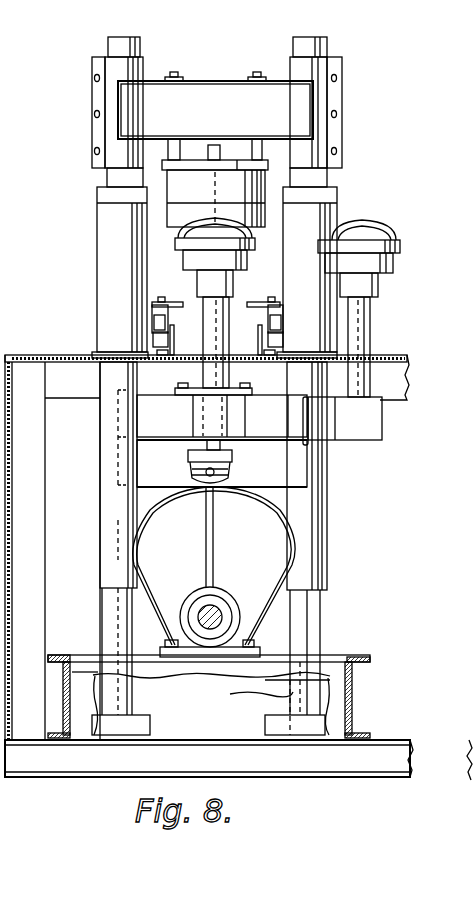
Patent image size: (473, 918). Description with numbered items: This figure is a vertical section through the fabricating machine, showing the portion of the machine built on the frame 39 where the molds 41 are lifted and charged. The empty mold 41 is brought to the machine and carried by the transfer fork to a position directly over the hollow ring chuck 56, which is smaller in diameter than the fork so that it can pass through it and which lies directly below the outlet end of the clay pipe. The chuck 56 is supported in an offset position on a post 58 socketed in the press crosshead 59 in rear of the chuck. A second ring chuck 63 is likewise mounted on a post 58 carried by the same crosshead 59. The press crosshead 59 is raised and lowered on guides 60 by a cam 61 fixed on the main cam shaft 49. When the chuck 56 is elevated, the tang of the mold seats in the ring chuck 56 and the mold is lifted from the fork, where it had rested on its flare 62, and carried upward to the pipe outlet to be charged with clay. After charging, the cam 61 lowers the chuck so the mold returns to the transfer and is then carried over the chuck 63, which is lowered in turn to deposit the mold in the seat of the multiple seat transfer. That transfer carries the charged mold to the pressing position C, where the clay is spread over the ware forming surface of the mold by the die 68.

The pressing position C is at (274, 182).
The die 68 is at (180, 212).
The ring chuck 63 is at (186, 258).
The mold 41 is at (384, 230).
The flare 62 is at (401, 247).
The hollow ring chuck 56 is at (395, 262).
The post 58 is at (208, 305).
The press crosshead 59 is at (286, 427).
The frame 39 is at (30, 538).
The cam 61 is at (292, 537).
The main cam shaft 49 is at (214, 611).
The guides 60 is at (133, 692).